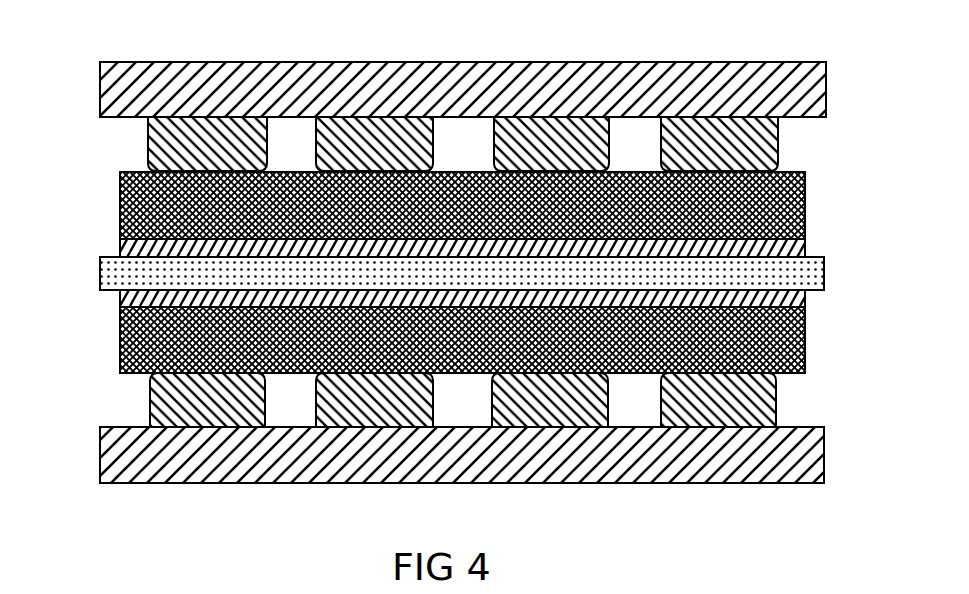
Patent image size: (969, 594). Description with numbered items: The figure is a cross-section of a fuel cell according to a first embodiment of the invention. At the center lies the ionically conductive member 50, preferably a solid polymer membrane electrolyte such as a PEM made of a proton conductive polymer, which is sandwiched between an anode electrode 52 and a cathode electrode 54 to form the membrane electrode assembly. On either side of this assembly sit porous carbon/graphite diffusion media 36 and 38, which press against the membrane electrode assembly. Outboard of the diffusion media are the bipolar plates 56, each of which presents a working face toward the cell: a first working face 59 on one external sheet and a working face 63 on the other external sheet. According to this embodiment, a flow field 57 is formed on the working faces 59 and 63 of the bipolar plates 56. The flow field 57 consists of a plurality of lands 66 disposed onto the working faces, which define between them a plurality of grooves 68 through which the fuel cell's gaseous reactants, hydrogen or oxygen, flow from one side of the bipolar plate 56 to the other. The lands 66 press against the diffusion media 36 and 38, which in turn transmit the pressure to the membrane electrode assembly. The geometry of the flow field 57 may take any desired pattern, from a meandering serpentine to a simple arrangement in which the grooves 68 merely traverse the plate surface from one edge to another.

The diffusion media 36 is at (790, 212).
The diffusion media 38 is at (805, 343).
The ionically conductive member 50 is at (815, 275).
The anode electrode 52 is at (120, 248).
The cathode electrode 54 is at (120, 295).
The bipolar plate 56 is at (163, 83).
The flow field 57 is at (407, 283).
The first working face 59 is at (806, 118).
The working face 63 is at (808, 427).
The lands 66 is at (391, 137).
The grooves 68 is at (641, 143).